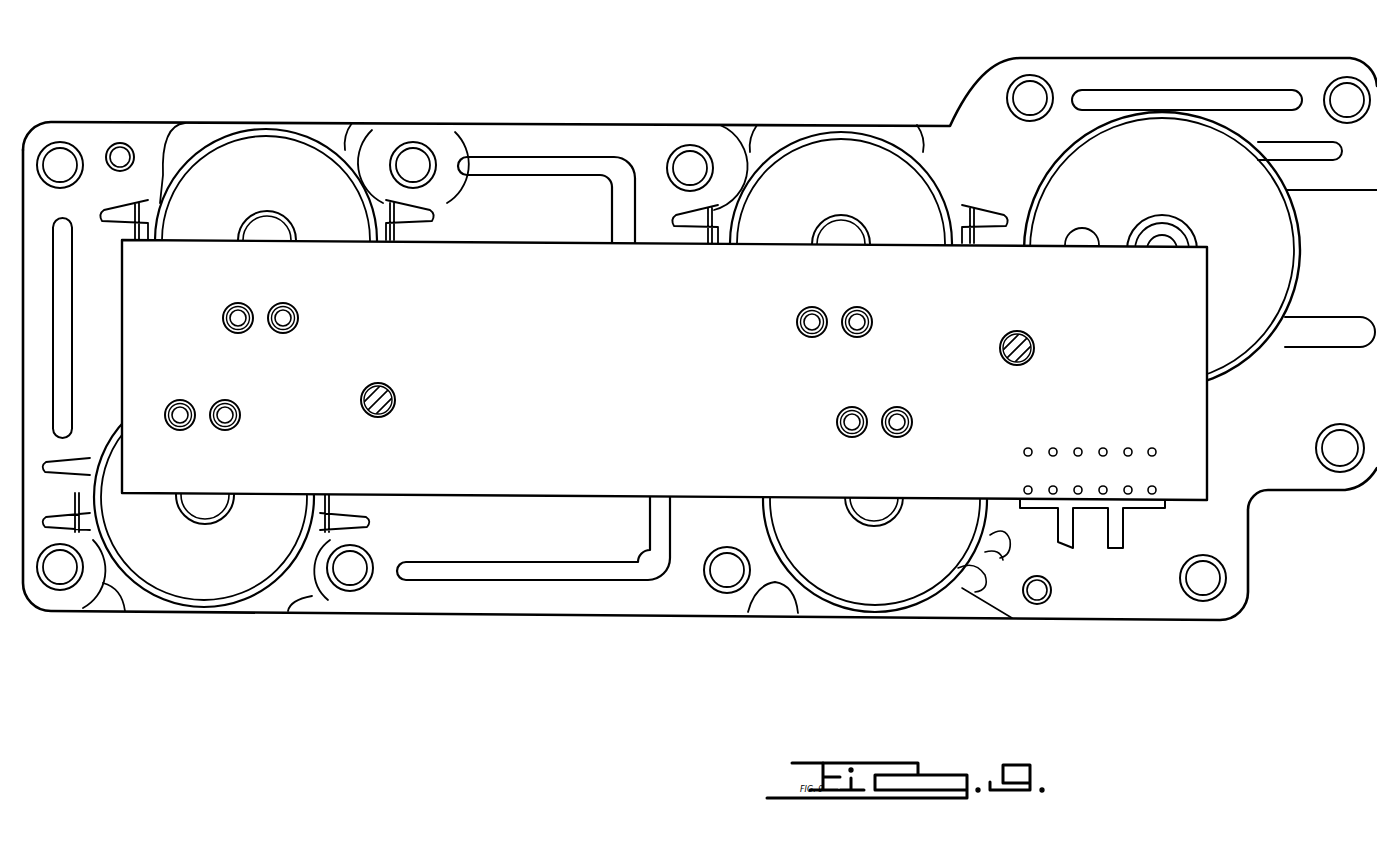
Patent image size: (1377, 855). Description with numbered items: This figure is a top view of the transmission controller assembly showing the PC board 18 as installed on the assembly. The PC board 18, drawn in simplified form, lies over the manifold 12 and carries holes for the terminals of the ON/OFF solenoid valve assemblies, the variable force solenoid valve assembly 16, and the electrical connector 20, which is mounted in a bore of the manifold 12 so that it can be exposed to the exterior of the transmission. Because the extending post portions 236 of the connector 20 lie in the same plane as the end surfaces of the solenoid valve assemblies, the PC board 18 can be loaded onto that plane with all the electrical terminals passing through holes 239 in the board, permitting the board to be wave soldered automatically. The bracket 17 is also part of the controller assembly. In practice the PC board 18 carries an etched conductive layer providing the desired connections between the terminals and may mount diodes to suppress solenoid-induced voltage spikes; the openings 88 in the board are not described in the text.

The manifold 12 is at (637, 128).
The variable force solenoid valve assembly 16 is at (1290, 252).
The bracket 17 is at (508, 129).
The PC board 18 is at (542, 498).
The electrical connector 20 is at (1116, 548).
The port opening 88 is at (282, 311).
The extending post portion 236 is at (1078, 447).
The hole 239 is at (1152, 448).